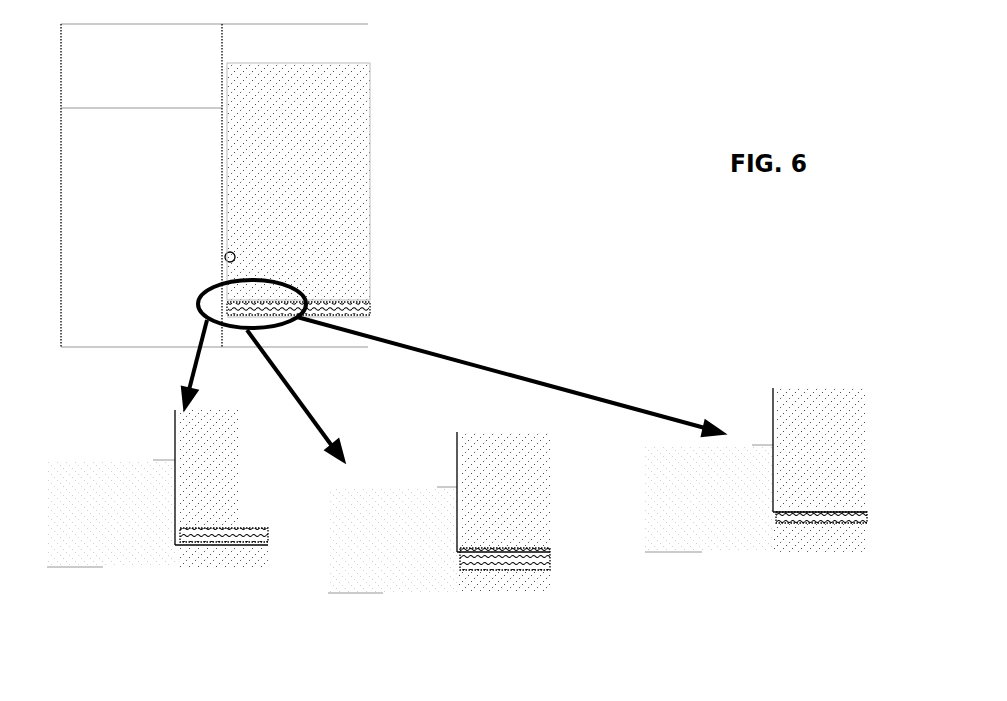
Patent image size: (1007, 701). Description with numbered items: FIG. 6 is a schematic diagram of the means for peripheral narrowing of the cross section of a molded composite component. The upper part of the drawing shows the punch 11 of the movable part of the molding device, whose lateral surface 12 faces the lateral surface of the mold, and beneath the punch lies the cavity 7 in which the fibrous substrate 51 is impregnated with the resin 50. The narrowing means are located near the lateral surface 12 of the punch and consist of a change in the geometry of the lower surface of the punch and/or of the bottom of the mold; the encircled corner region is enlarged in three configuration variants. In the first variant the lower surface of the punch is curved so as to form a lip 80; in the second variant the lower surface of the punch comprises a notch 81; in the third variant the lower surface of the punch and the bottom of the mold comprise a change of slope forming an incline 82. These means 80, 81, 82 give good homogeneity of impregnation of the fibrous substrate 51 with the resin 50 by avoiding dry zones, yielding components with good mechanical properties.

The punch 11 is at (362, 127).
The lateral surface of the punch 12 is at (230, 207).
The cavity 7 is at (370, 307).
The fibrous substrate 51 is at (370, 312).
The resin 50 is at (858, 513).
The lip 80 is at (177, 527).
The notch 81 is at (497, 547).
The incline 82 is at (815, 507).